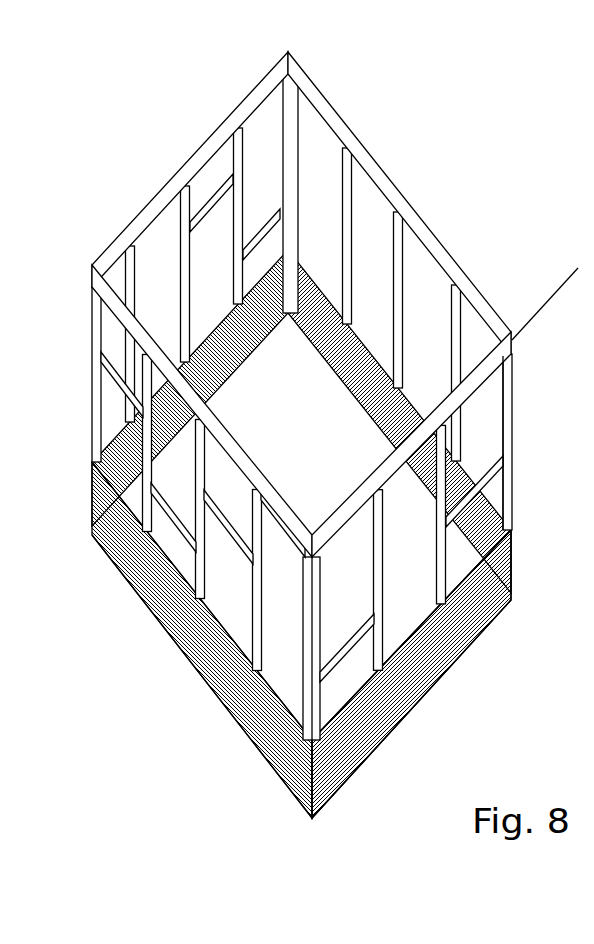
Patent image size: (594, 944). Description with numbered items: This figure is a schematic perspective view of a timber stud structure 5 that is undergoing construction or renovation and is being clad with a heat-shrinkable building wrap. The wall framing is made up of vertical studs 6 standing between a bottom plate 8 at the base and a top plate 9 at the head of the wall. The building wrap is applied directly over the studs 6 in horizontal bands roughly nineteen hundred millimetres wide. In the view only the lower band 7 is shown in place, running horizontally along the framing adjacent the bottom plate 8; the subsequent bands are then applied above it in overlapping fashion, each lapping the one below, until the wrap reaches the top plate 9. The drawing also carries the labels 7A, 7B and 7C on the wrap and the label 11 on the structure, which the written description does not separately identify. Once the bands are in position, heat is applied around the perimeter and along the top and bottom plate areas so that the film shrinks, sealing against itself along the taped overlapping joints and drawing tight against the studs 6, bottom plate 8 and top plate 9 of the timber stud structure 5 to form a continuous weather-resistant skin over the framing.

The timber stud structure 5 is at (490, 160).
The studs 6 is at (237, 267).
The lower band 7 is at (484, 587).
The wall panel first layer 7A is at (512, 523).
The wall panel second layer 7B is at (512, 453).
The wall panel third layer 7C is at (512, 397).
The bottom plate 8 is at (418, 705).
The top plate 9 is at (197, 673).
The blocking 11 is at (95, 352).